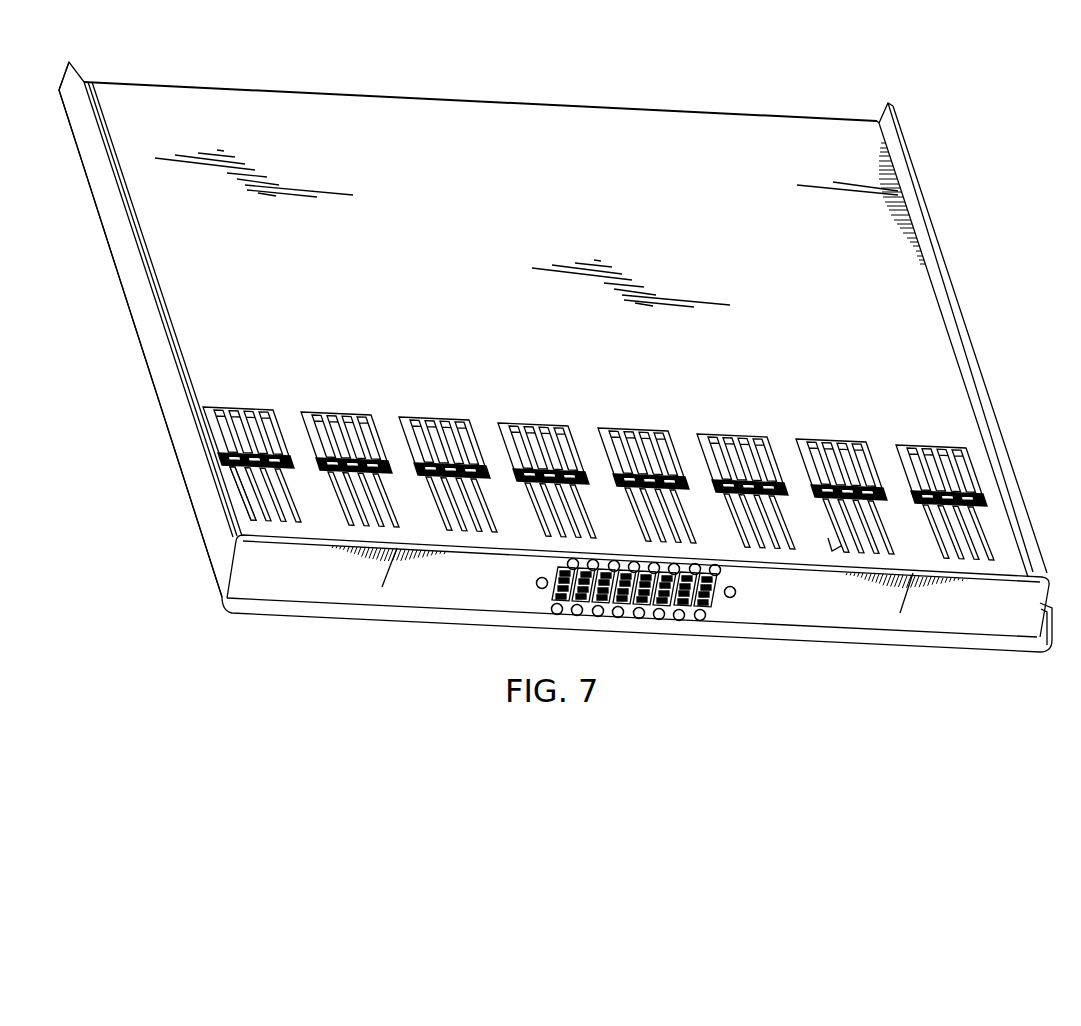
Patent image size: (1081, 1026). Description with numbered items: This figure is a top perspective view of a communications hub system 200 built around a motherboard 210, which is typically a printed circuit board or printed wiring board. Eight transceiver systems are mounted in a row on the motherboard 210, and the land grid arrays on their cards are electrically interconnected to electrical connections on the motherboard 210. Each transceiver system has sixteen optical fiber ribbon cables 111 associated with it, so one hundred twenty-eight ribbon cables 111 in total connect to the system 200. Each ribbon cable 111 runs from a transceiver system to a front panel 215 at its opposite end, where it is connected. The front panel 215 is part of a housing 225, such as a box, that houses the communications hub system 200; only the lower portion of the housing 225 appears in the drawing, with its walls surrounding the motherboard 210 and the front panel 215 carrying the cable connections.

The communications hub system 200 is at (745, 80).
The motherboard 210 is at (300, 138).
The housing 225 is at (162, 393).
The optical fiber ribbon cable 111 is at (241, 497).
The front panel 215 is at (552, 597).